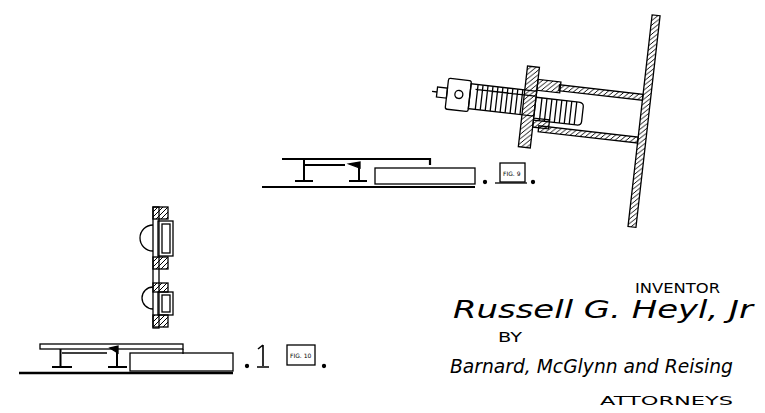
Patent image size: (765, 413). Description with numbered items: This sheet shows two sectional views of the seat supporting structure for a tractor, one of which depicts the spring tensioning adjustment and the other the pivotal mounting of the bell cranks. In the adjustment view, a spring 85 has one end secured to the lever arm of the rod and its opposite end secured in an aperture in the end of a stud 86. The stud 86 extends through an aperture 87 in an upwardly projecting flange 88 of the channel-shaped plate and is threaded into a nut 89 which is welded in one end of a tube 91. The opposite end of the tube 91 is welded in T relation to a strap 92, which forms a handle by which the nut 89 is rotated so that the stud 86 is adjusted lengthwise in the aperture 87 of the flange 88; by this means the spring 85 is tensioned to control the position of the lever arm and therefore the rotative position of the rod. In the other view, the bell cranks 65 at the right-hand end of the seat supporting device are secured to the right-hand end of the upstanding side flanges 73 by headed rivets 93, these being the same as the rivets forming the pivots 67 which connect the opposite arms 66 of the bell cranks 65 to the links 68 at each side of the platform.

In FIG. 10, the bell crank 65 is at (148, 275).
In FIG. 10, the arm of the bell crank 66 is at (153, 281).
In FIG. 10, the pivot 67 is at (175, 295).
In FIG. 10, the link 68 is at (163, 329).
In FIG. 10, the upstanding side flange 73 is at (166, 208).
In FIG. 10, the headed rivet 93 is at (175, 232).
In FIG. 9, the spring 85 is at (433, 93).
In FIG. 9, the stud 86 is at (473, 86).
In FIG. 9, the aperture 87 is at (548, 83).
In FIG. 9, the upwardly projecting flange 88 is at (532, 68).
In FIG. 9, the nut 89 is at (560, 87).
In FIG. 9, the tube 91 is at (597, 142).
In FIG. 9, the strap 92 is at (655, 52).